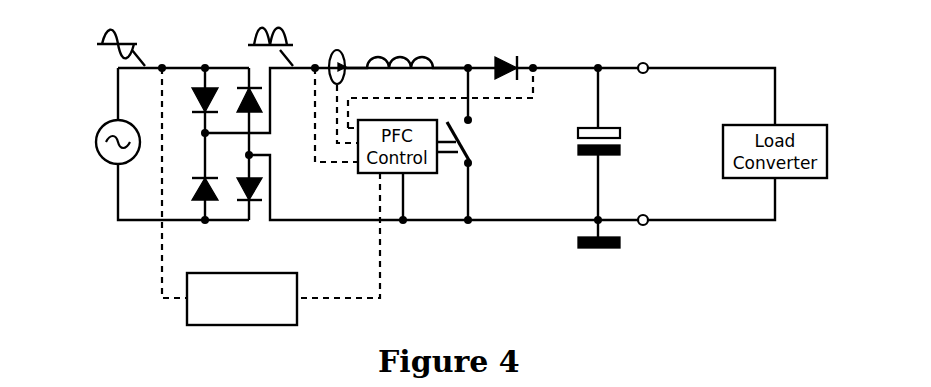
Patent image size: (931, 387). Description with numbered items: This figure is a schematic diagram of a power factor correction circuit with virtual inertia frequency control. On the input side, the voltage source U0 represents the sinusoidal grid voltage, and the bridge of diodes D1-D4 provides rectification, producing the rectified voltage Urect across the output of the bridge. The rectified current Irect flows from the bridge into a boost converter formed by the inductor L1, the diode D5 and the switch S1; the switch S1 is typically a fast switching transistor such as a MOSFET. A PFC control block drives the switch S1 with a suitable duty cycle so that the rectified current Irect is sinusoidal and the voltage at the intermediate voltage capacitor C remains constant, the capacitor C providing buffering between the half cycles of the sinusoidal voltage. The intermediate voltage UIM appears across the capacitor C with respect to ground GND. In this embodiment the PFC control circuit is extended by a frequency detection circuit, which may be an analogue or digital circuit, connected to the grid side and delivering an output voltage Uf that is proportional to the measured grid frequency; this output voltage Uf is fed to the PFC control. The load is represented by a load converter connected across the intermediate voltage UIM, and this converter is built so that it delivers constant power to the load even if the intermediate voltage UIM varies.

The voltage source U0 is at (83, 120).
The diodes D1-D4 is at (233, 175).
The rectified voltage Urect is at (293, 77).
The rectified current Irect is at (344, 52).
The inductor L1 is at (406, 44).
The diode D5 is at (505, 50).
The switch S1 is at (472, 144).
The capacitor C is at (584, 143).
The intermediate voltage UIM is at (643, 73).
The ground GND is at (636, 241).
The output voltage Uf is at (264, 292).